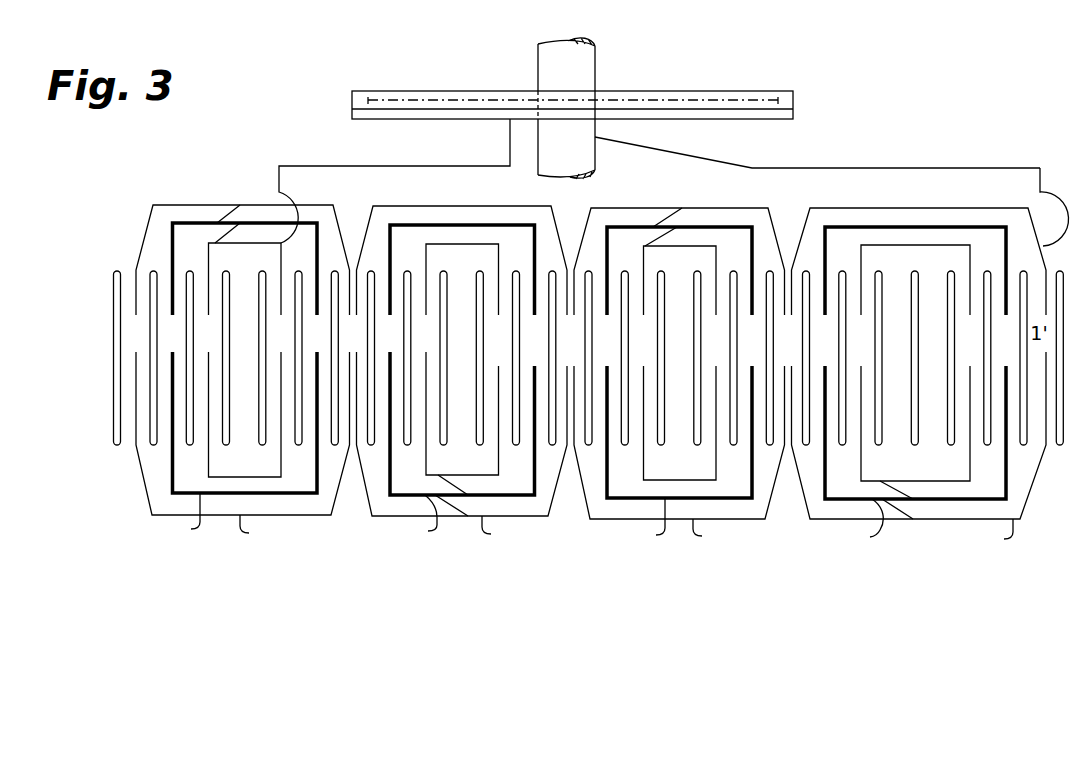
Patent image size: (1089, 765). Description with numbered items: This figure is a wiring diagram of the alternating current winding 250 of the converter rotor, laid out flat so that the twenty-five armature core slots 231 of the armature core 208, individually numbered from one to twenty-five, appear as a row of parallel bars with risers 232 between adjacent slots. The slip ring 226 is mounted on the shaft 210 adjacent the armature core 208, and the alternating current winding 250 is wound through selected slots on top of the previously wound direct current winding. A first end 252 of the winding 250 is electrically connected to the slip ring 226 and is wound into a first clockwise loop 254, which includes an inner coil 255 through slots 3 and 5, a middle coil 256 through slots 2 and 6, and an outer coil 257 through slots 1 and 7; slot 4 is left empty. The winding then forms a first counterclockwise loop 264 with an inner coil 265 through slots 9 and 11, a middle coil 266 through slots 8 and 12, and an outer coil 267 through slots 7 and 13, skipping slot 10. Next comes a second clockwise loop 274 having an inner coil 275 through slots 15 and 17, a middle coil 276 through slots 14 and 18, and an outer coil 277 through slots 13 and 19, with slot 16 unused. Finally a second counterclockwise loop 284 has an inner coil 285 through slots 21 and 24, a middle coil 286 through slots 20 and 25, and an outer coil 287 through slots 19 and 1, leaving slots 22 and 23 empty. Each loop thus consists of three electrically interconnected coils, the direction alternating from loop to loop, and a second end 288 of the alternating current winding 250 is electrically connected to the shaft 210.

The armature core 208 is at (106, 448).
The shaft 210 is at (593, 57).
The slip ring 226 is at (582, 97).
The armature core slots 231 is at (483, 272).
The risers 232 is at (150, 270).
The alternating current winding 250 is at (818, 181).
The first end 252 is at (420, 166).
The first clockwise loop 254 is at (134, 511).
The inner coil 255 is at (276, 470).
The middle coil 256 is at (232, 380).
The outer coil 257 is at (265, 528).
The first counterclockwise loop 264 is at (362, 513).
The inner coil 265 is at (494, 470).
The middle coil 266 is at (461, 385).
The outer coil 267 is at (506, 531).
The second clockwise loop 274 is at (580, 512).
The inner coil 275 is at (713, 471).
The middle coil 276 is at (679, 387).
The outer coil 277 is at (719, 533).
The second counterclockwise loop 284 is at (800, 514).
The inner coil 285 is at (943, 471).
The middle coil 286 is at (915, 390).
The outer coil 287 is at (986, 536).
The second end 288 is at (744, 165).
The armature slot 1 is at (133, 333).
The armature slot 2 is at (178, 358).
The armature slot 3 is at (214, 358).
The armature slot 4 is at (251, 358).
The armature slot 5 is at (287, 358).
The armature slot 6 is at (323, 358).
The armature slot 7 is at (359, 358).
The armature slot 8 is at (396, 358).
The armature slot 9 is at (432, 358).
The armature slot 10 is at (468, 358).
The armature slot 11 is at (504, 358).
The armature slot 12 is at (541, 358).
The armature slot 13 is at (577, 358).
The armature slot 14 is at (613, 358).
The armature slot 15 is at (649, 358).
The armature slot 16 is at (686, 358).
The armature slot 17 is at (722, 358).
The armature slot 18 is at (758, 358).
The armature slot 19 is at (794, 358).
The armature slot 20 is at (831, 358).
The armature slot 21 is at (867, 358).
The armature slot 22 is at (903, 358).
The armature slot 23 is at (939, 358).
The armature slot 24 is at (976, 358).
The armature slot 25 is at (1012, 358).